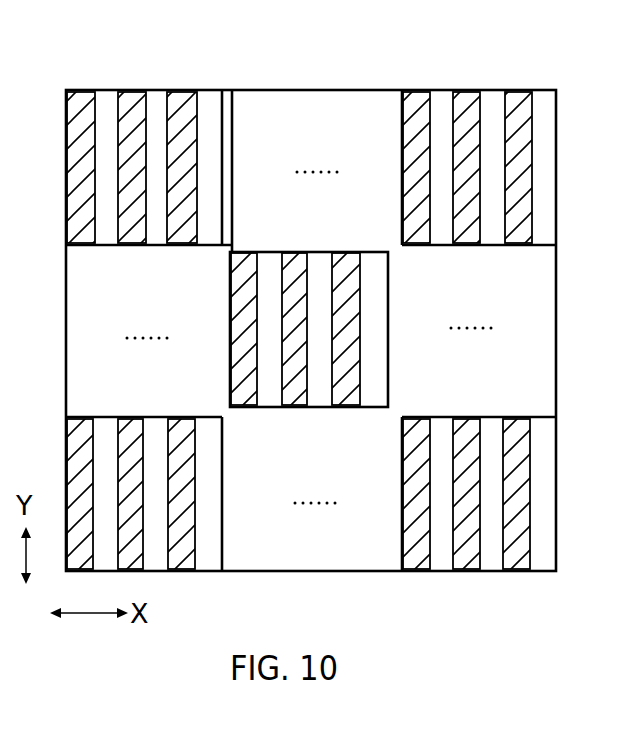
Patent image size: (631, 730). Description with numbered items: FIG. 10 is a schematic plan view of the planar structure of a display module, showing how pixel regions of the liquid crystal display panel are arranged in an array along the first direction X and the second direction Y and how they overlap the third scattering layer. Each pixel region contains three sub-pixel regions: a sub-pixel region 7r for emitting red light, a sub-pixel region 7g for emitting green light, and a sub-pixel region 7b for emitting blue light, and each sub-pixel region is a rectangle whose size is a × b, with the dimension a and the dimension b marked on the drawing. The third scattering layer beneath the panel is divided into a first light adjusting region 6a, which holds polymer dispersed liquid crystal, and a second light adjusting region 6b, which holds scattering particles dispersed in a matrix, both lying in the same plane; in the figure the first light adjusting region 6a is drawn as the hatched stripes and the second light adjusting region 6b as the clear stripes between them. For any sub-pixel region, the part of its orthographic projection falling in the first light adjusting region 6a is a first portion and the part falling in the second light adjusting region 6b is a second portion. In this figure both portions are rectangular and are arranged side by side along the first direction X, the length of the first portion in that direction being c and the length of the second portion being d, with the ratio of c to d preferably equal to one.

The first light adjusting region 6a is at (80, 110).
The second light adjusting region 6b is at (106, 116).
The sub-pixel region for emitting red light 7r is at (451, 83).
The sub-pixel region for emitting green light 7g is at (505, 83).
The sub-pixel region for emitting blue light 7b is at (559, 83).
The sub-pixel region size dimension a is at (234, 170).
The sub-pixel region size dimension b is at (121, 278).
The length of the first portion in the first direction c is at (121, 250).
The length of the second portion in the first direction d is at (144, 250).